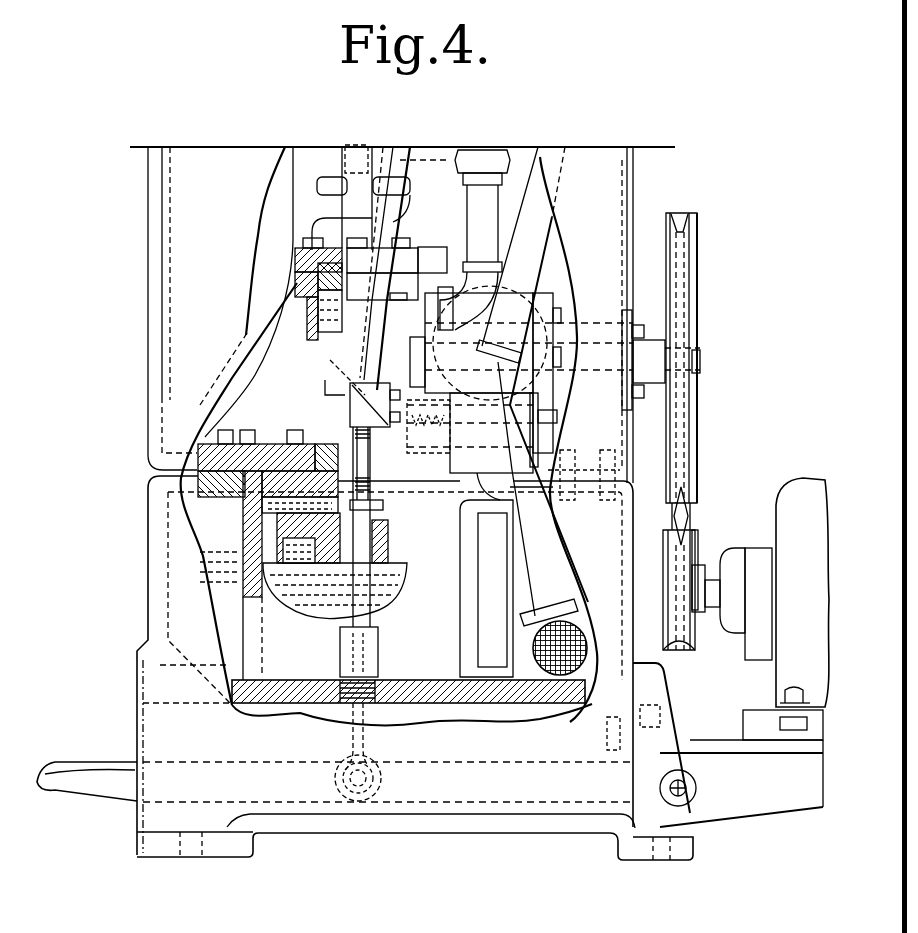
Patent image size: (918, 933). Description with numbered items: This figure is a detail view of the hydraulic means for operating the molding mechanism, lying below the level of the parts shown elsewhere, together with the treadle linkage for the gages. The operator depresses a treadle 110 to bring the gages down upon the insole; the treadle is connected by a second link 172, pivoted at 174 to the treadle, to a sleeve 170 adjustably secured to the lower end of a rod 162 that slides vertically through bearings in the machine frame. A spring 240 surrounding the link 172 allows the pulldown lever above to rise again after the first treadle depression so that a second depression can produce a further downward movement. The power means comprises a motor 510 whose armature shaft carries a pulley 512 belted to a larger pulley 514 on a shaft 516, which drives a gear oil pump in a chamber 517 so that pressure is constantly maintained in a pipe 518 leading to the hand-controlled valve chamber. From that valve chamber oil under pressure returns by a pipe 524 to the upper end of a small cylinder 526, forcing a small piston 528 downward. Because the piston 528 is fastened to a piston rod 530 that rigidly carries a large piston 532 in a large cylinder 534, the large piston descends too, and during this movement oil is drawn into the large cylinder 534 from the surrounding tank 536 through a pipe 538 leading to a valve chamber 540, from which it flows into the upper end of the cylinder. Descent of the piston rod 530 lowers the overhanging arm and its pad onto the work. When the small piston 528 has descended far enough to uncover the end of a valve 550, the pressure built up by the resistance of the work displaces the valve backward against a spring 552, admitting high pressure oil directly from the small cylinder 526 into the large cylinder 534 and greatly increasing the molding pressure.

The treadle 110 is at (93, 785).
The rod 162 is at (392, 223).
The sleeve 170 is at (357, 408).
The second link 172 is at (362, 634).
The pivot 174 is at (363, 778).
The spring 240 is at (375, 500).
The motor 510 is at (802, 487).
The pulley 512 is at (692, 538).
The larger pulley 514 is at (698, 273).
The shaft 516 is at (700, 363).
The chamber 517 is at (490, 320).
The pipe 518 is at (537, 217).
The pipe 524 is at (473, 247).
The small cylinder 526 is at (303, 318).
The small piston 528 is at (325, 387).
The piston rod 530 is at (357, 227).
The large piston 532 is at (278, 607).
The large cylinder 534 is at (250, 617).
The tank 536 is at (160, 627).
The pipe 538 is at (490, 668).
The valve chamber 540 is at (503, 487).
The valve 550 is at (343, 377).
The spring 552 is at (433, 447).